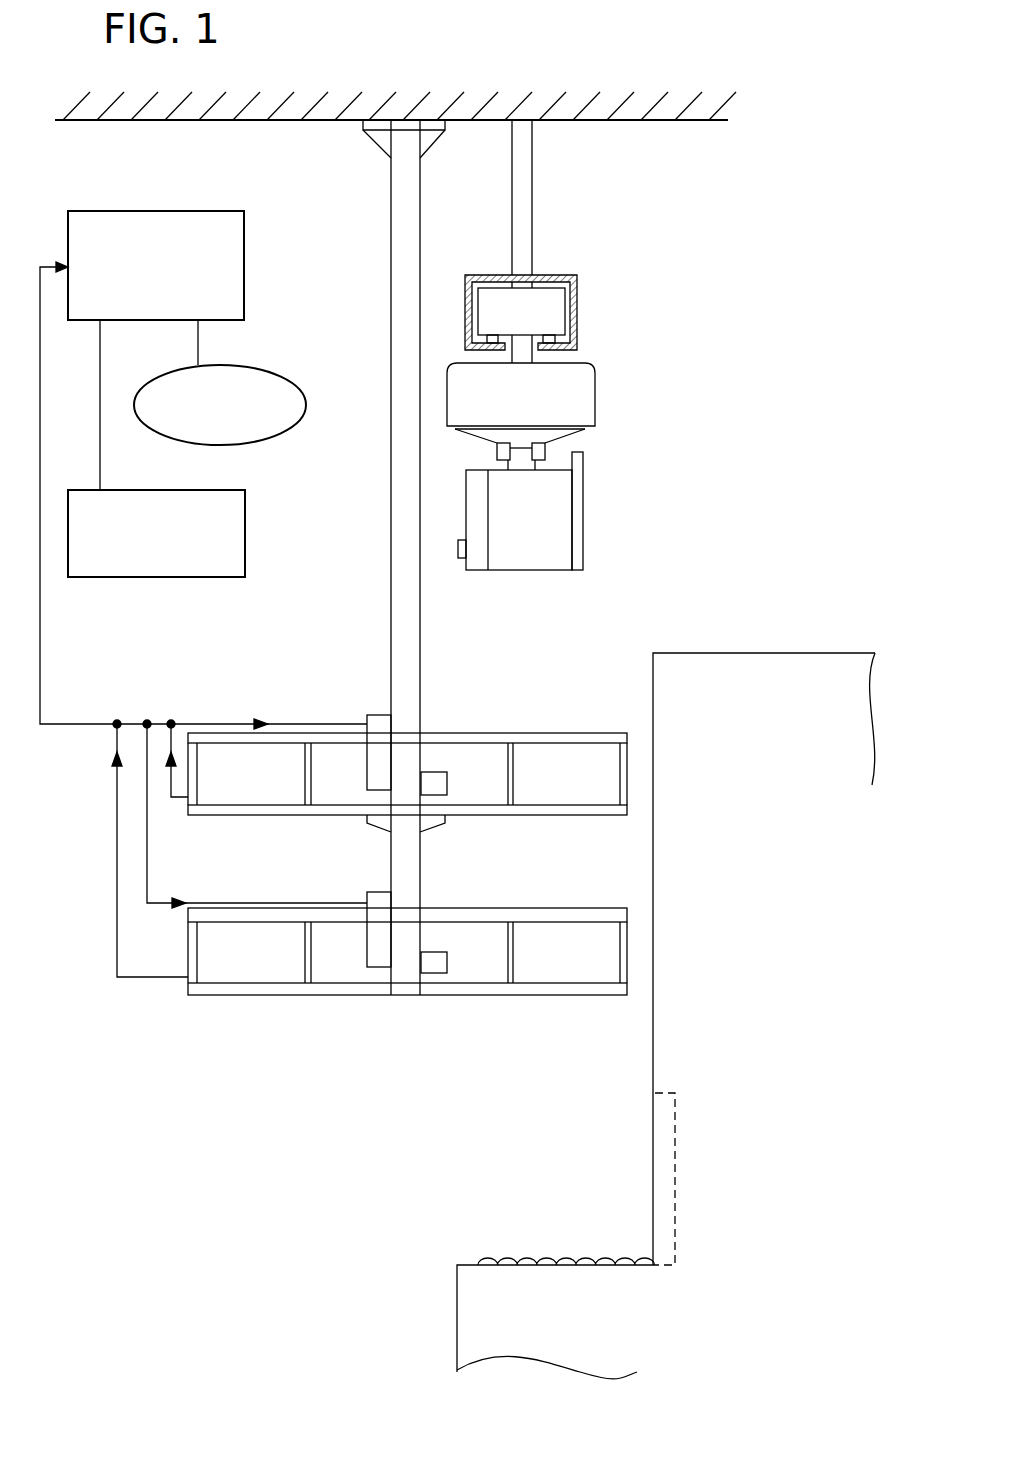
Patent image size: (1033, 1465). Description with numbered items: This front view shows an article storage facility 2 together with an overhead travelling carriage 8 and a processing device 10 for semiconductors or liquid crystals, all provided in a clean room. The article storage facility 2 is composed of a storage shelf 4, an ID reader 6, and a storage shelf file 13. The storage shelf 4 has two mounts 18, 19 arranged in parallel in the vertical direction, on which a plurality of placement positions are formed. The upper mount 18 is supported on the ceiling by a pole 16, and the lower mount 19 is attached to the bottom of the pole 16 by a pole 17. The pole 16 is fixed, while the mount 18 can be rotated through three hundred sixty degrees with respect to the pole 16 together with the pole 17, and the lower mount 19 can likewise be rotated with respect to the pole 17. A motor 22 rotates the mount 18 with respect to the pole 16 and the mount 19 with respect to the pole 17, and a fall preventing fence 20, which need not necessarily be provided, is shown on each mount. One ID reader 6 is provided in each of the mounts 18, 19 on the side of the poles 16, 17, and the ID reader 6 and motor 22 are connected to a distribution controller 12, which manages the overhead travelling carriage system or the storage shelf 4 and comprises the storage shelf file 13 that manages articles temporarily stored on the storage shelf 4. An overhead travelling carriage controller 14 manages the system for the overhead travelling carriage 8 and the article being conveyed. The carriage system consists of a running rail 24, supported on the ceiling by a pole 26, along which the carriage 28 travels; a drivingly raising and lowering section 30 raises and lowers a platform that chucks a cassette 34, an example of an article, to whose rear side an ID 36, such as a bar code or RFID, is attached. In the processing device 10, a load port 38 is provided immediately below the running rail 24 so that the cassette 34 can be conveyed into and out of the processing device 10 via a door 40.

The article storage facility 2 is at (396, 1017).
The storage shelf 4 is at (382, 650).
The ID reader 6 is at (447, 784).
The overhead travelling carriage 8 is at (612, 384).
The processing device 10 is at (783, 645).
The distribution controller 12 is at (244, 247).
The storage shelf file 13 is at (276, 372).
The overhead travelling carriage controller 14 is at (245, 511).
The pole 16 is at (391, 601).
The pole 17 is at (408, 862).
The mount 18 is at (237, 815).
The mount 19 is at (235, 995).
The fall preventing fence 20 is at (510, 733).
The motor 22 is at (376, 720).
The running rail 24 is at (577, 288).
The pole 26 is at (532, 193).
The carriage 28 is at (553, 313).
The drivingly raising and lowering section 30 is at (578, 410).
The cassette 34 is at (545, 557).
The ID 36 is at (458, 560).
The load port 38 is at (547, 1260).
The door 40 is at (664, 1143).